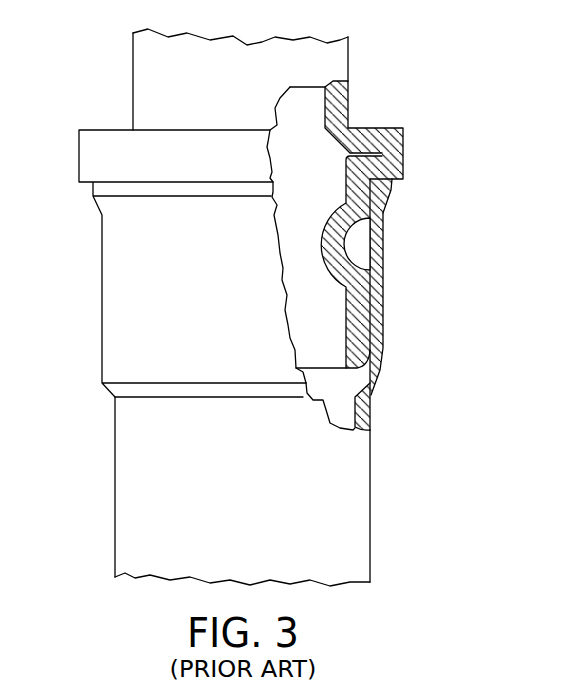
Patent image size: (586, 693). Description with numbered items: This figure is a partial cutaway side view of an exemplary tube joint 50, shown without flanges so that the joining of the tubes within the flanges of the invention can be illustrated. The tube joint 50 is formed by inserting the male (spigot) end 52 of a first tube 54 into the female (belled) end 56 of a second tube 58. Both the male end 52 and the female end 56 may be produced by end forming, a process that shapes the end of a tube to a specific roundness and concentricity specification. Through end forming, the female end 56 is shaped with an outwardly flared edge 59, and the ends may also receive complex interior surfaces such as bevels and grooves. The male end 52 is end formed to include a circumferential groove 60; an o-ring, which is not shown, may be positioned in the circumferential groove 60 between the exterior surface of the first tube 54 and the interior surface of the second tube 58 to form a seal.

The tube joint 50 is at (402, 267).
The male (spigot) end 52 is at (383, 302).
The first tube 54 is at (136, 86).
The female (belled) end 56 is at (383, 349).
The second tube 58 is at (358, 496).
The outwardly flared edge 59 is at (390, 183).
The circumferential groove 60 is at (329, 219).